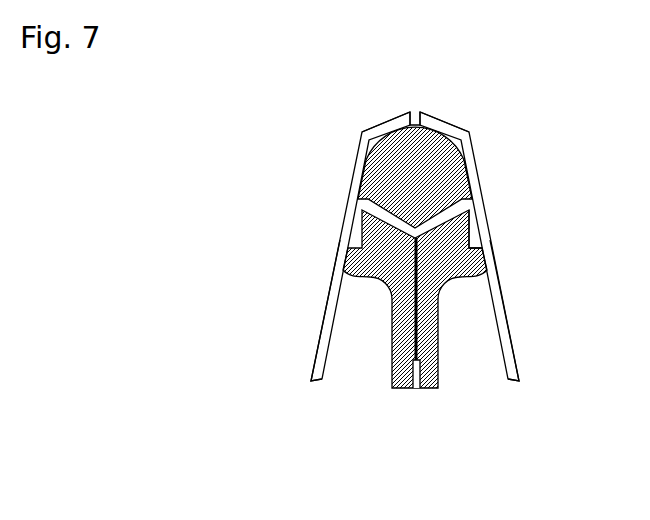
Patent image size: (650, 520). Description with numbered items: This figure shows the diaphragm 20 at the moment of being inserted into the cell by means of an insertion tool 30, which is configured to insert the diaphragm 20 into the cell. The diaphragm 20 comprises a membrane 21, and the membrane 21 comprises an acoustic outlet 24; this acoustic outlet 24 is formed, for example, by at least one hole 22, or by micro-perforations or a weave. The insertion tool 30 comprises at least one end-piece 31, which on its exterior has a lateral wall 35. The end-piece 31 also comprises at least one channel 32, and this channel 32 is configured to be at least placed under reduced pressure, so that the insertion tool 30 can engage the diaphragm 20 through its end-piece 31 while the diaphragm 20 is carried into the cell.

The diaphragm 20 is at (283, 186).
The membrane 21 is at (322, 246).
The hole 22 is at (414, 126).
The acoustic outlet 24 is at (415, 110).
The insertion tool 30 is at (462, 331).
The end-piece 31 is at (462, 267).
The channel 32 is at (416, 357).
The lateral wall 35 is at (461, 255).